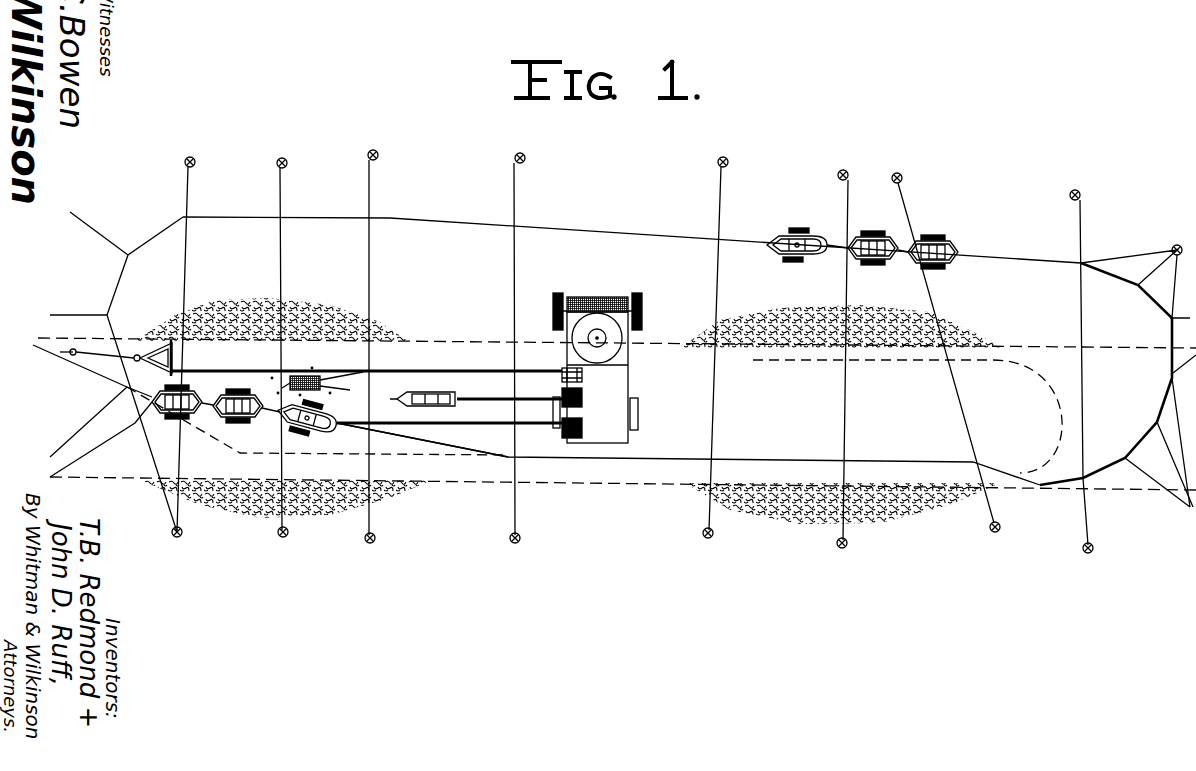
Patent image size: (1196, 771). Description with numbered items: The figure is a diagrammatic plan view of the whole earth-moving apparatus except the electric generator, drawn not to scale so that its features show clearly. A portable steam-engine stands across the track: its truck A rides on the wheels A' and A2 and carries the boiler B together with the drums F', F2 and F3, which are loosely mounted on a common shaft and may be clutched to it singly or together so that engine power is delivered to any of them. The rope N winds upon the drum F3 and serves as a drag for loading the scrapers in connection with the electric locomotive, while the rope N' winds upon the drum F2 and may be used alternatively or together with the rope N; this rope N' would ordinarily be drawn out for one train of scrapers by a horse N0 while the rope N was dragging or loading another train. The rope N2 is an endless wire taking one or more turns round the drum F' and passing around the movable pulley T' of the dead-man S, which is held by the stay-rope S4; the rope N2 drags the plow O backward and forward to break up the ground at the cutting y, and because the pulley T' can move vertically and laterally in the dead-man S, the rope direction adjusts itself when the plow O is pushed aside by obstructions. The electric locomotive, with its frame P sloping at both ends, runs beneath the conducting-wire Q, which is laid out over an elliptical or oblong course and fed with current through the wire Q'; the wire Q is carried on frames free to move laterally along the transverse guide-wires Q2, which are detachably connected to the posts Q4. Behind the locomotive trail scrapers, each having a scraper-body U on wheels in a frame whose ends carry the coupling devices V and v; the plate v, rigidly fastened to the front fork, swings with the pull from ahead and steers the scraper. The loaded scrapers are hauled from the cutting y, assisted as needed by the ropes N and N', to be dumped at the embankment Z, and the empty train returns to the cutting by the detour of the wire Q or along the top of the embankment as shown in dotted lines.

The conducting-wire Q is at (617, 389).
The transverse guide-wires Q2 is at (367, 198).
The posts Q4 is at (370, 153).
The wire Q' is at (83, 432).
The cutting y is at (569, 391).
The embankment Z is at (907, 416).
The dead-man S is at (172, 363).
The stay-rope S4 is at (97, 362).
The movable pulley T' is at (196, 382).
The plow O is at (312, 380).
The scraper-body U is at (175, 419).
The frame of electric locomotive P is at (320, 410).
The coupling device V is at (885, 238).
The coupling device v is at (939, 243).
The rope N is at (449, 440).
The rope N' is at (509, 387).
The rope N2 is at (468, 371).
The horse N0 is at (428, 388).
The truck A is at (617, 370).
The boiler B is at (597, 330).
The wheels A2 is at (556, 306).
The drum F' is at (584, 374).
The drum F2 is at (582, 398).
The drum F3 is at (582, 428).
The wheels A' is at (596, 414).